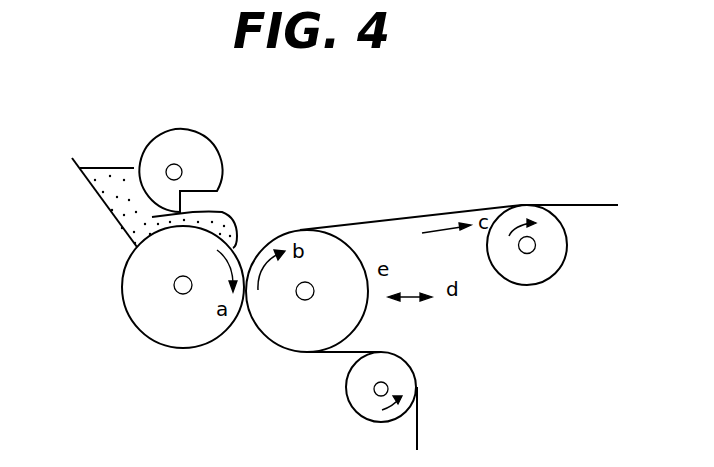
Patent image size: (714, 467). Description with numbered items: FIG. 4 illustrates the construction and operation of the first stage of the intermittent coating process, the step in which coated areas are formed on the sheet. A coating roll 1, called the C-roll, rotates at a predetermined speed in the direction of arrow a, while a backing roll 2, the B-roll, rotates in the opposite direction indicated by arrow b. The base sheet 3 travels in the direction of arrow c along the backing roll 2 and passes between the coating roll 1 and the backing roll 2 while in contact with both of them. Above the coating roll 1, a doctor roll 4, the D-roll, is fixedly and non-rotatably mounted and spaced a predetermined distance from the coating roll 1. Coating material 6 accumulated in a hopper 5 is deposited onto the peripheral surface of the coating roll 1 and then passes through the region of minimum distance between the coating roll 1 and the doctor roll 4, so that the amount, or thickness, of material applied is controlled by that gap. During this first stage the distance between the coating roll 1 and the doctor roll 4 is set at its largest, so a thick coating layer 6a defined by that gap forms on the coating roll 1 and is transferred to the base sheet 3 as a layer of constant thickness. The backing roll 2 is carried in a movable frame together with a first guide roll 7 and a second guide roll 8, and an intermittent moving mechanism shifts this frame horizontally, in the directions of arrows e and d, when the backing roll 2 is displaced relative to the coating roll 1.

The coating roll 1 is at (137, 315).
The backing roll 2 is at (282, 333).
The base sheet 3 is at (415, 217).
The doctor roll 4 is at (162, 140).
The hopper 5 is at (75, 162).
The coating material 6 is at (112, 170).
The thick coating layer 6a is at (222, 223).
The first guide roll 7 is at (545, 258).
The second guide roll 8 is at (370, 405).